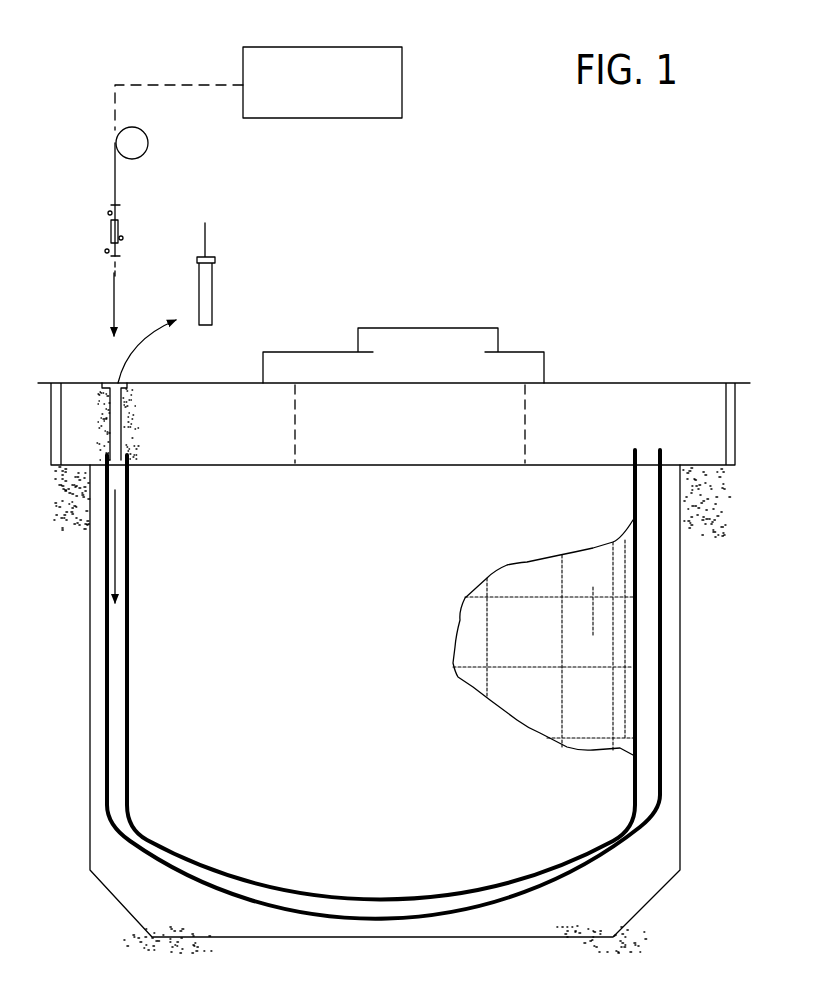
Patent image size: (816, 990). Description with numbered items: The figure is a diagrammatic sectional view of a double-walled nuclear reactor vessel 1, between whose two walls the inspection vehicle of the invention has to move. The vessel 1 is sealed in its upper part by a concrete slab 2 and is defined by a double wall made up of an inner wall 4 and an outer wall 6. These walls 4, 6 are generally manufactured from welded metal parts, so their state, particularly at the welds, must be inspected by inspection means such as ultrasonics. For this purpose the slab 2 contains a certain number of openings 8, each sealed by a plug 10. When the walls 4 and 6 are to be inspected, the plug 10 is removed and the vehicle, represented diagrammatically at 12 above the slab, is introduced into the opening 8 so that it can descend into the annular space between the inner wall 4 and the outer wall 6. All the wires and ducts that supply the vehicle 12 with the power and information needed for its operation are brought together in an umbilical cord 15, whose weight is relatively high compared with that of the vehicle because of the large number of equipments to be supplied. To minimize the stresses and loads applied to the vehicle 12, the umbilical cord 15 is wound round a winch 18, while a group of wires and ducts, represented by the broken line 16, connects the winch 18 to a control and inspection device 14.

The nuclear reactor vessel 1 is at (597, 378).
The concrete slab 2 is at (340, 452).
The inner wall 4 is at (126, 682).
The outer wall 6 is at (105, 768).
The opening 8 is at (112, 404).
The plug 10 is at (207, 285).
The vehicle 12 is at (104, 233).
The control and inspection device 14 is at (327, 60).
The umbilical cord 15 is at (117, 190).
The group of wires and ducts 16 is at (160, 84).
The winch 18 is at (126, 132).